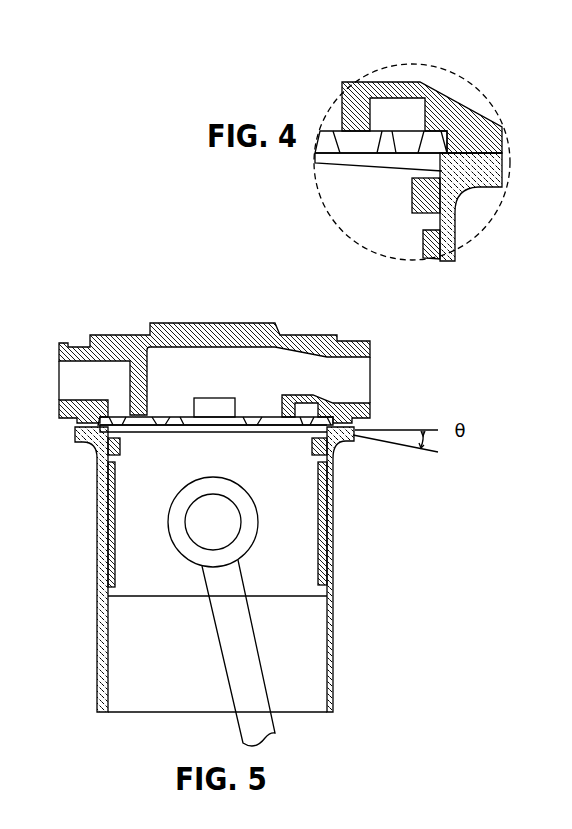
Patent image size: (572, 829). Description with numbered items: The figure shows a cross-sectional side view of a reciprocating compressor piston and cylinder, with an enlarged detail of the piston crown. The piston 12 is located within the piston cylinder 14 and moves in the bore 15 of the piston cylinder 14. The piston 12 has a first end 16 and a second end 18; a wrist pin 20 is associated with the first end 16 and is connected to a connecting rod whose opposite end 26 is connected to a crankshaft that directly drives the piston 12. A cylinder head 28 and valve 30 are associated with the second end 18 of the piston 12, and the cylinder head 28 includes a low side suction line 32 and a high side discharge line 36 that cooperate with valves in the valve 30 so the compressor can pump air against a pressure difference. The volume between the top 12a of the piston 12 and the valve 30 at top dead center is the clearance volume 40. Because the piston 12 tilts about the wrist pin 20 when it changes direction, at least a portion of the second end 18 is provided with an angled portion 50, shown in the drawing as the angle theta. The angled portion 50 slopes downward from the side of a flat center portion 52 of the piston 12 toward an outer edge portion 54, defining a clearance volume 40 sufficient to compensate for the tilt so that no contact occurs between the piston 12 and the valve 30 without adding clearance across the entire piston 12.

In FIG. 4, the piston 12 is at (352, 209).
In FIG. 5, the piston 12 is at (271, 515).
In FIG. 5, the top of the piston 12a is at (238, 427).
In FIG. 5, the piston cylinder 14 is at (95, 577).
In FIG. 5, the bore 15 is at (158, 666).
In FIG. 5, the first end 16 is at (293, 567).
In FIG. 5, the second end 18 is at (162, 490).
In FIG. 5, the wrist pin 20 is at (250, 543).
In FIG. 5, the opposite end of the connecting rod 26 is at (265, 718).
In FIG. 5, the cylinder head 28 is at (113, 339).
In FIG. 4, the valve 30 is at (340, 127).
In FIG. 5, the valve 30 is at (268, 416).
In FIG. 5, the low side suction line 32 is at (370, 388).
In FIG. 5, the high side discharge line 36 is at (59, 388).
In FIG. 4, the clearance volume 40 is at (428, 165).
In FIG. 5, the clearance volume 40 is at (97, 490).
In FIG. 4, the angled portion 50 is at (363, 162).
In FIG. 5, the angled portion 50 is at (288, 425).
In FIG. 5, the center portion 52 is at (215, 427).
In FIG. 4, the outer edge portion 54 is at (442, 173).